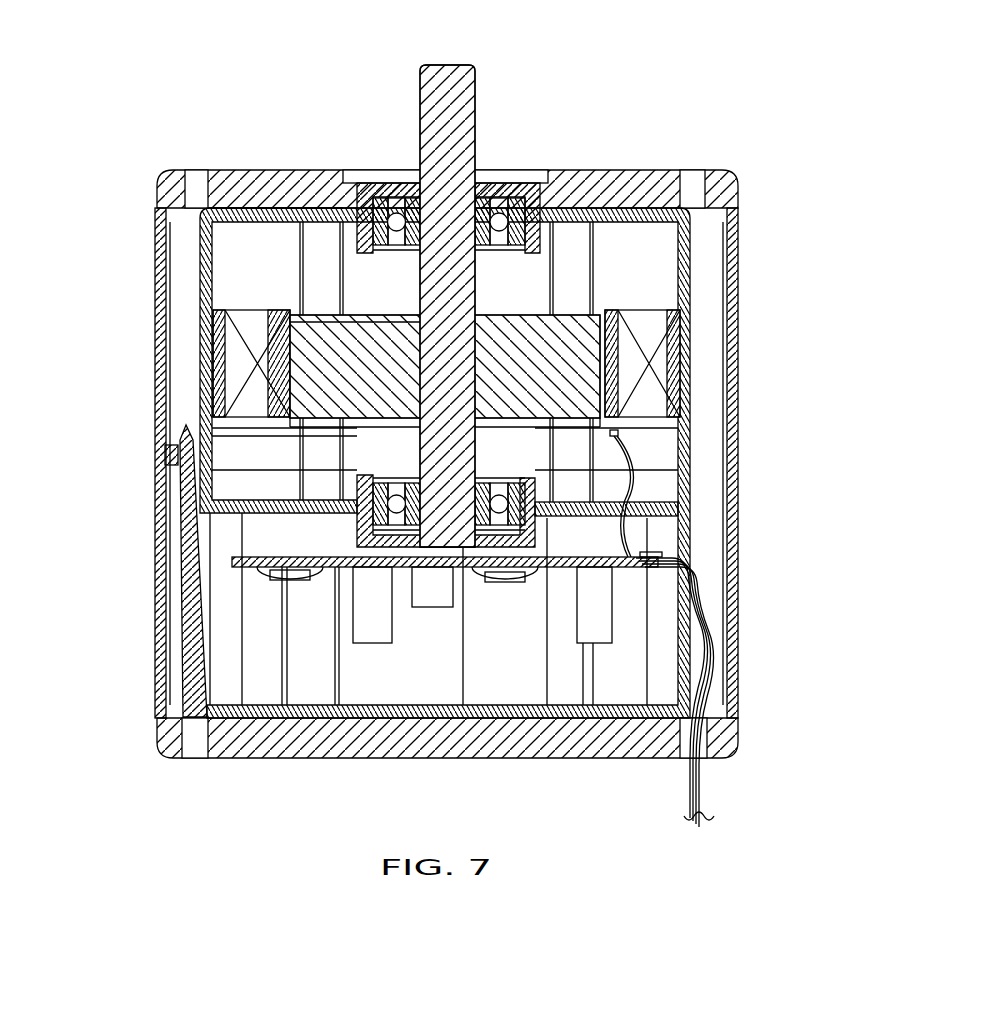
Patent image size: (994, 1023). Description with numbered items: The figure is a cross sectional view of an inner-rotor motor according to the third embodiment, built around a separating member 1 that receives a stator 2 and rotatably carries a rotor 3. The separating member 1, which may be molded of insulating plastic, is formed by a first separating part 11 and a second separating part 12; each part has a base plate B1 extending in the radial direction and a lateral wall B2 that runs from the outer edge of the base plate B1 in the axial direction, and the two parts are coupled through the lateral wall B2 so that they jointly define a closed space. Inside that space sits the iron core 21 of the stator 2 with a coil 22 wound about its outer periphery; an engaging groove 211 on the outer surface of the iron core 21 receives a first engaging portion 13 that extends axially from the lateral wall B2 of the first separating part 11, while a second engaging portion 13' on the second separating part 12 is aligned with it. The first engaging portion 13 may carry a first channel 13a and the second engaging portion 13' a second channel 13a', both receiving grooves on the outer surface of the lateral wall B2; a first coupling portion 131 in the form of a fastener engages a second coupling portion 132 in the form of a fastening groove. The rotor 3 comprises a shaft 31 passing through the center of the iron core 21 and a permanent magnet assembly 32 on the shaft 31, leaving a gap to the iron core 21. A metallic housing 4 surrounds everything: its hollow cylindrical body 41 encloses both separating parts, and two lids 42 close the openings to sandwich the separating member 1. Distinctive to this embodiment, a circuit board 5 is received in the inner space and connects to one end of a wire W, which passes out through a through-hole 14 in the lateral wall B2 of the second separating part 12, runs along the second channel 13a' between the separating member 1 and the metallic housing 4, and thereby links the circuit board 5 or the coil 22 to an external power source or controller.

The separating member 1 is at (420, 463).
The first separating part 11 is at (202, 373).
The second separating part 12 is at (349, 531).
The first engaging portion 13 is at (418, 217).
The second engaging portion 13' is at (473, 660).
The first channel 13a is at (121, 465).
The second channel 13a' is at (746, 650).
The first coupling portion 131 is at (168, 453).
The second coupling portion 132 is at (182, 425).
The through-hole 14 is at (690, 563).
The stator 2 is at (444, 218).
The iron core 21 is at (277, 312).
The engaging groove 211 is at (232, 258).
The coil 22 is at (255, 312).
The rotor 3 is at (445, 273).
The shaft 31 is at (467, 103).
The permanent magnet assembly 32 is at (498, 337).
The metallic housing 4 is at (475, 508).
The body 41 is at (808, 298).
The lid 42 is at (454, 508).
The circuit board 5 is at (563, 567).
The base plate B1 is at (223, 262).
The lateral wall B2 is at (202, 322).
The wire W is at (708, 647).